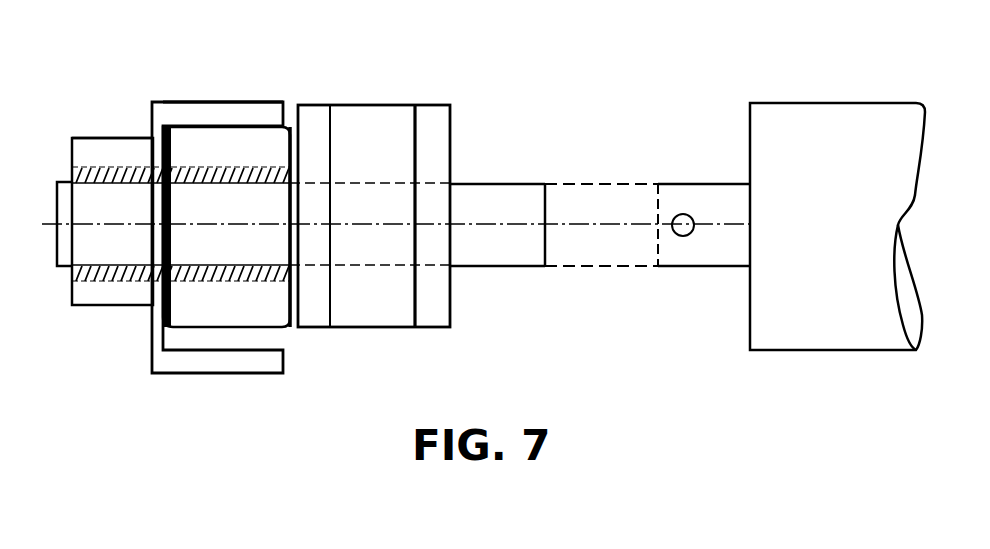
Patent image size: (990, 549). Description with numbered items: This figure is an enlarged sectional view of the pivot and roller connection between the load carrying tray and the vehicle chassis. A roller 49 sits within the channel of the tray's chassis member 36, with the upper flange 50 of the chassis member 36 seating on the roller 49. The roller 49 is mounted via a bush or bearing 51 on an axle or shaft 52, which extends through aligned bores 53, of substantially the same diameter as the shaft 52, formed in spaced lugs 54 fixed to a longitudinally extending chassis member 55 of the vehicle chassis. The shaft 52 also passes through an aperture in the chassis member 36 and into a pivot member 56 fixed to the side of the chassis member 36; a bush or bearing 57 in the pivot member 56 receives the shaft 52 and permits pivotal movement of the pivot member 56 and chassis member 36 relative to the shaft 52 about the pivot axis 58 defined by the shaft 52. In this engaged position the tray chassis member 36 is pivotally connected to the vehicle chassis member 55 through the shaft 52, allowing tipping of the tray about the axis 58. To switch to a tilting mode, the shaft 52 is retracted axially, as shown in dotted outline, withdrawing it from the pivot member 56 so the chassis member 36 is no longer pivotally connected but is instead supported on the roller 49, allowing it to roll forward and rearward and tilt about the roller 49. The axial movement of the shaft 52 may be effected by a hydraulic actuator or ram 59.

The chassis member 36 is at (220, 96).
The roller 49 is at (222, 316).
The upper flange 50 is at (180, 102).
The bush or bearing 51 is at (272, 282).
The shaft 52 is at (510, 184).
The bore 53 is at (313, 170).
The lug 54 is at (318, 105).
The chassis member 55 is at (382, 118).
The pivot member 56 is at (100, 308).
The bush or bearing 57 is at (115, 138).
The pivot axis 58 is at (580, 223).
The hydraulic actuator or ram 59 is at (750, 103).